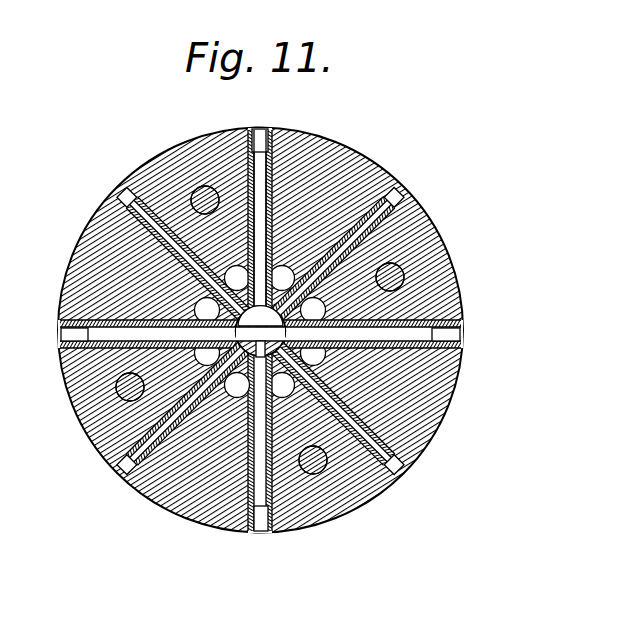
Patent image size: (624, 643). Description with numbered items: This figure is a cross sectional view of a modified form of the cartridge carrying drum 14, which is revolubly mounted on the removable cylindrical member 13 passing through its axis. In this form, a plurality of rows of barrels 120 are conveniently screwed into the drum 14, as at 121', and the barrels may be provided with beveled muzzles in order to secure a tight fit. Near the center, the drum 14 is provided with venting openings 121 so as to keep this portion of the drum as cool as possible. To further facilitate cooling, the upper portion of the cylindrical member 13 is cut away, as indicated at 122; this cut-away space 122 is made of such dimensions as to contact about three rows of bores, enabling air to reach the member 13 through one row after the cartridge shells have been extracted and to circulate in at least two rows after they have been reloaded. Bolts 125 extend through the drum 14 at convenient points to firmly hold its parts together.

The cartridge carrying drum 14 is at (440, 389).
The removable cylindrical member 13 is at (252, 359).
The barrels 120 is at (364, 228).
The venting openings 121 is at (274, 247).
The screwed connection of barrel to drum 121' is at (381, 414).
The cut-away space 122 is at (250, 290).
The bolts 125 is at (197, 192).